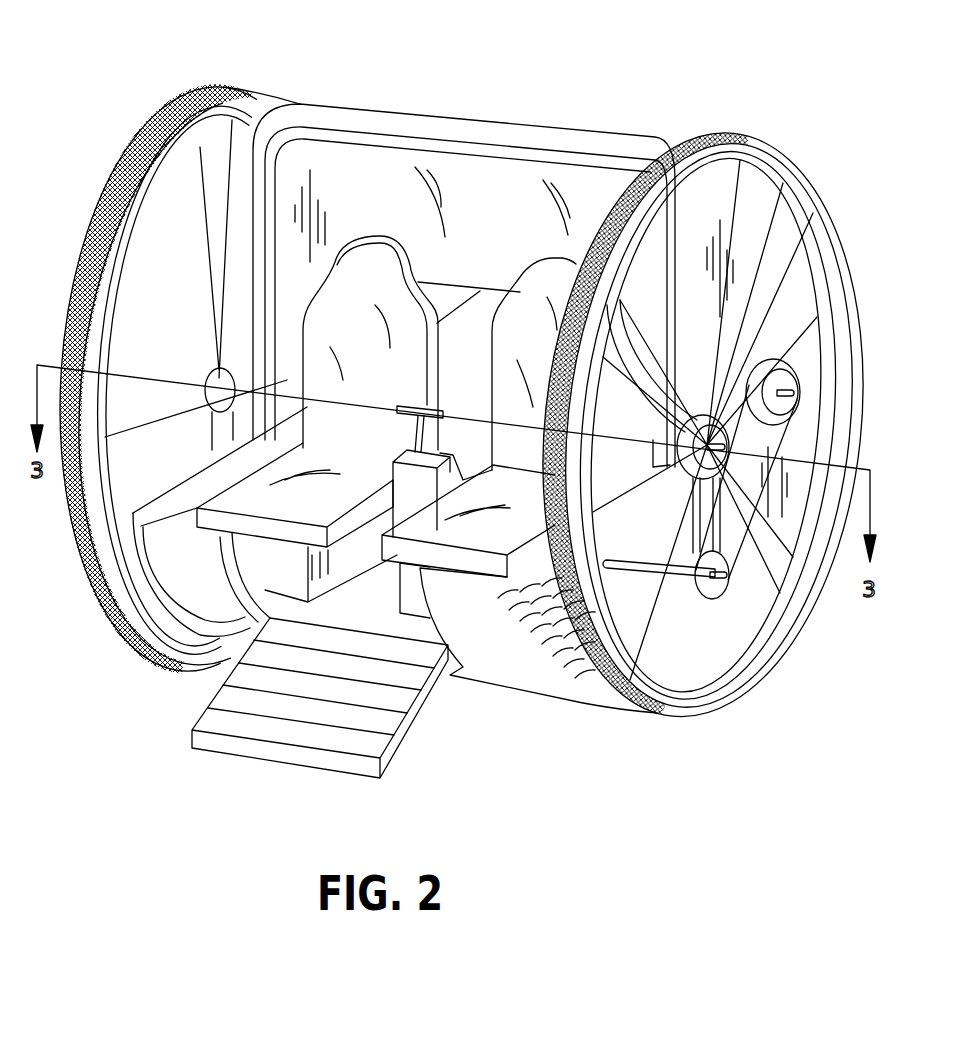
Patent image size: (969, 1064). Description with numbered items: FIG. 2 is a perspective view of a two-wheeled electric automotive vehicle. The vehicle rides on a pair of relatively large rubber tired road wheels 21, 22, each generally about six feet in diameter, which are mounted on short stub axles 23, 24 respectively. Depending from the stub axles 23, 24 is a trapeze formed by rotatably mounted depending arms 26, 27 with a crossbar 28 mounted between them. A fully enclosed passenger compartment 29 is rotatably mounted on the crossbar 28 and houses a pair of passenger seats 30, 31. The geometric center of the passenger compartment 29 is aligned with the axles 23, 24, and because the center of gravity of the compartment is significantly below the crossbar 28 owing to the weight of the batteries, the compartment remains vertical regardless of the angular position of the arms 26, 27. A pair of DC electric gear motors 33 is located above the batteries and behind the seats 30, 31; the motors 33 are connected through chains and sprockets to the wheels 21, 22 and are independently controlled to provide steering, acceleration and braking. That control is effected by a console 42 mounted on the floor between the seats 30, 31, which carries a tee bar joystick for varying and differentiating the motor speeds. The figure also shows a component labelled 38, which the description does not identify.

The road wheel 21 is at (122, 172).
The road wheel 22 is at (698, 130).
The stub axle 23 is at (214, 380).
The stub axle 24 is at (708, 432).
The depending arm 26 is at (222, 427).
The depending arm 27 is at (706, 523).
The crossbar 28 is at (665, 574).
The passenger compartment 29 is at (471, 107).
The passenger seat 30 is at (360, 331).
The passenger seat 31 is at (545, 347).
The DC electric gear motor 33 is at (800, 378).
The entry platform 38 is at (375, 725).
The console 42 is at (402, 478).